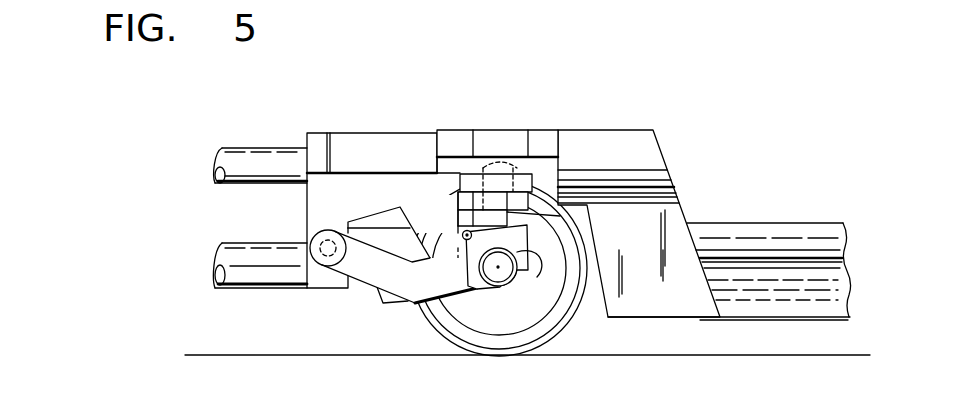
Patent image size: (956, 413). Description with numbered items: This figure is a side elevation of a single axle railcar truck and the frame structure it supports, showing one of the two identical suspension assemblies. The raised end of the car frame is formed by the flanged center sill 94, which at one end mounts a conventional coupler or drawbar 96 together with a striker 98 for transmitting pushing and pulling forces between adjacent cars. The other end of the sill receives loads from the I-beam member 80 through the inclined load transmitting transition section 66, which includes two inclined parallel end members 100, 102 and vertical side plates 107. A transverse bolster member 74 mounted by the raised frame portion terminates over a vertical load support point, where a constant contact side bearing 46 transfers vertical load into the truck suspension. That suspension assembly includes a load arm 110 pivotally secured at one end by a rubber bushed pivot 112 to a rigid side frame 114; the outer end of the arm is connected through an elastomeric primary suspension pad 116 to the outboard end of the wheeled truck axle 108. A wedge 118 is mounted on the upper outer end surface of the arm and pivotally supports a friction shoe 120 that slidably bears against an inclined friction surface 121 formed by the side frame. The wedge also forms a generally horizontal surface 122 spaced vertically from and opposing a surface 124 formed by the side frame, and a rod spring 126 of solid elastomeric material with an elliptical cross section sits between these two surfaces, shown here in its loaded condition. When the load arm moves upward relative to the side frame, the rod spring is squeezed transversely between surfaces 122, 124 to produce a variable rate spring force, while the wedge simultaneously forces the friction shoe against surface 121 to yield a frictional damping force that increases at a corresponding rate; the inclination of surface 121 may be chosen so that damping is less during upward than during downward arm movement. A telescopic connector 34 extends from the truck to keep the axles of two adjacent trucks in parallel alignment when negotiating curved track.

The telescopic connector 34 is at (270, 284).
The constant contact side bearing 46 is at (527, 163).
The inclined load transmitting transition section 66 is at (672, 125).
The transverse bolster member 74 is at (488, 133).
The I-beam member 80 is at (846, 320).
The flanged center sill 94 is at (368, 152).
The coupler or drawbar 96 is at (250, 158).
The striker 98 is at (315, 152).
The inclined end member 100 is at (605, 310).
The inclined end member 102 is at (678, 197).
The vertical side plate 107 is at (662, 295).
The wheeled truck axle 108 is at (500, 277).
The load arm 110 is at (360, 282).
The rubber bushed pivot 112 is at (317, 245).
The rigid side frame 114 is at (357, 203).
The elastomeric primary suspension pad 116 is at (541, 276).
The wedge 118 is at (476, 287).
The friction shoe 120 is at (462, 229).
The friction surface 121 is at (460, 205).
The horizontal surface 122 is at (560, 216).
The side frame surface 124 is at (524, 204).
The rod spring 126 is at (472, 202).